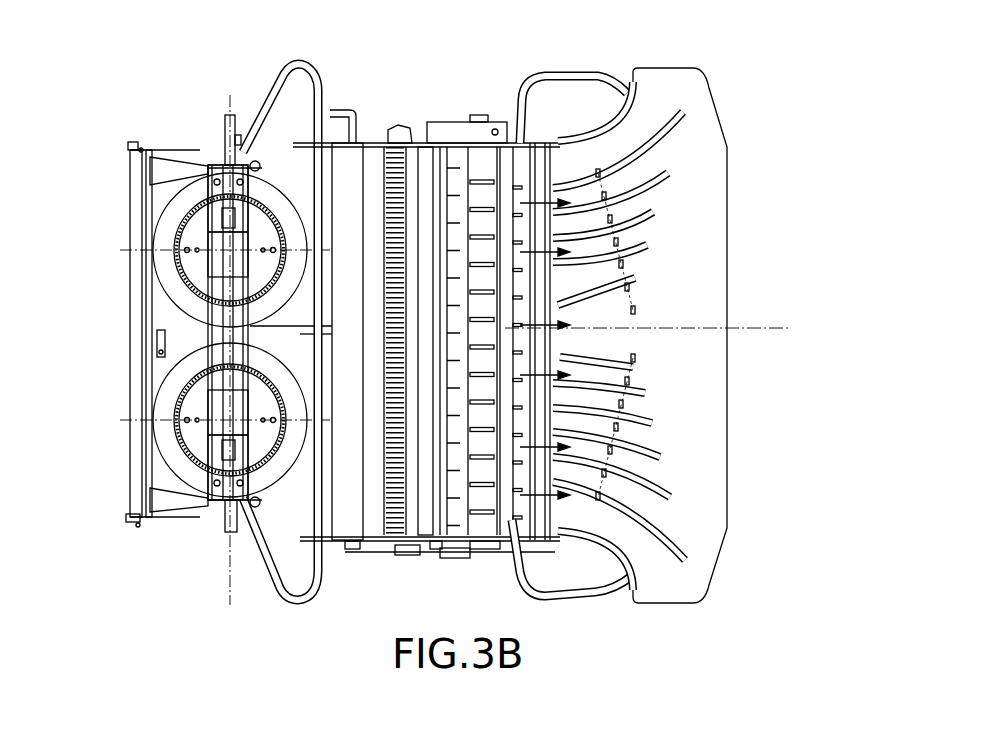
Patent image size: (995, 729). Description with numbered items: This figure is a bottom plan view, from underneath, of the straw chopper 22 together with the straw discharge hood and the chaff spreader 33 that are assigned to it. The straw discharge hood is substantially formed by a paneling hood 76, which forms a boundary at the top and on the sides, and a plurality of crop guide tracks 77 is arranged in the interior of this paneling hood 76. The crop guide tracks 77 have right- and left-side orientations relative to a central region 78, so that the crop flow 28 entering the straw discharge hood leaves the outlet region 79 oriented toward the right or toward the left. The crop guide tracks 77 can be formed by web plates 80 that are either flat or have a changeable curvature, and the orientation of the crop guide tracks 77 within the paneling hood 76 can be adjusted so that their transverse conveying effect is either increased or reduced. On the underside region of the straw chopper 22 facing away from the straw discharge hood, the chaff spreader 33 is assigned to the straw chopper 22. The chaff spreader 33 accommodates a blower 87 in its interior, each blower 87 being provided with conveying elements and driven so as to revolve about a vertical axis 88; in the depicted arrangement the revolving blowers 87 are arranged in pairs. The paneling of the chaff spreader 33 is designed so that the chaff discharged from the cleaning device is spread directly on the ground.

The straw chopper 22 is at (450, 106).
The crop flow 28 is at (528, 105).
The chaff spreader 33 is at (244, 82).
The paneling hood 76 is at (650, 92).
The crop guide tracks 77 is at (680, 125).
The central region 78 is at (770, 330).
The outlet region 79 is at (760, 285).
The web plates 80 is at (615, 334).
The blower 87 is at (200, 190).
The vertical axis 88 is at (218, 237).